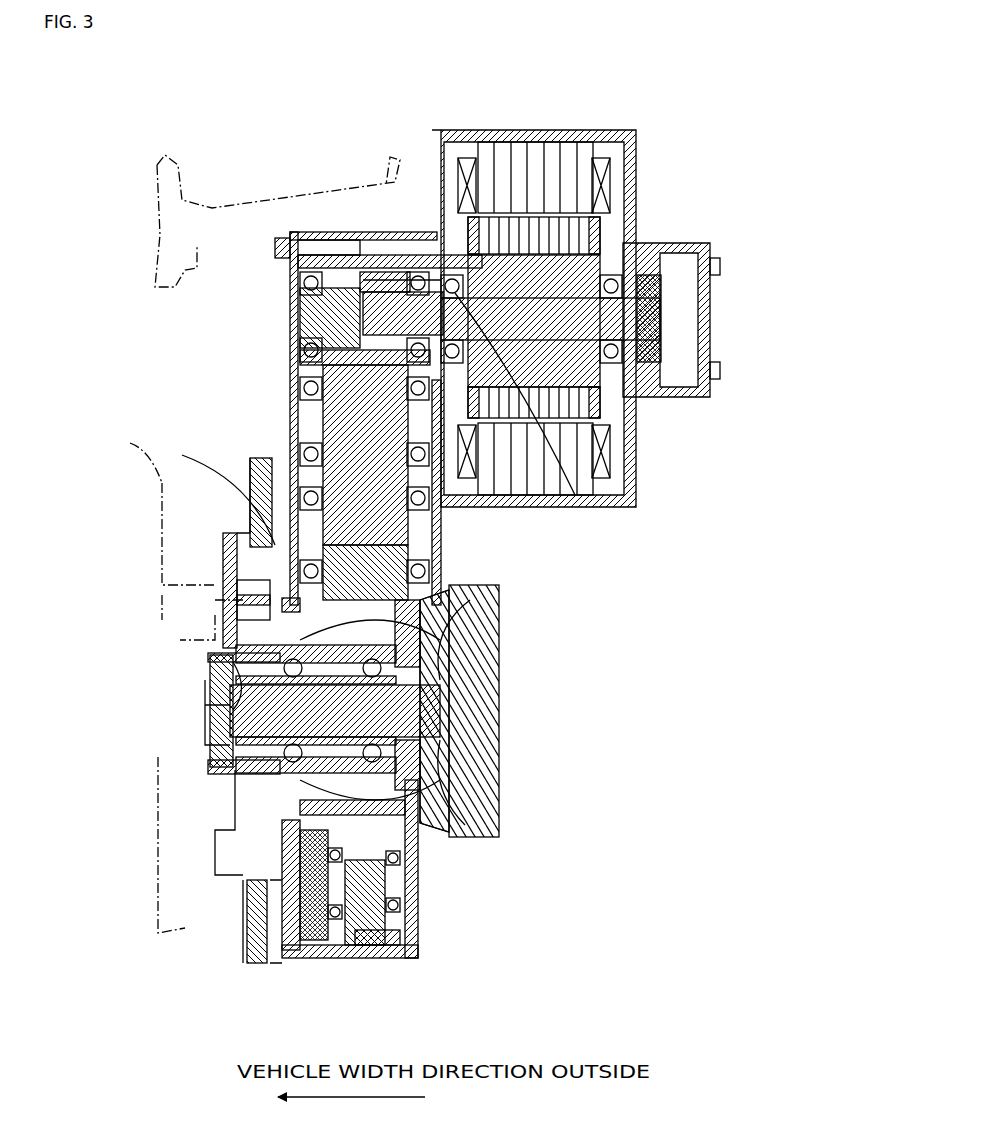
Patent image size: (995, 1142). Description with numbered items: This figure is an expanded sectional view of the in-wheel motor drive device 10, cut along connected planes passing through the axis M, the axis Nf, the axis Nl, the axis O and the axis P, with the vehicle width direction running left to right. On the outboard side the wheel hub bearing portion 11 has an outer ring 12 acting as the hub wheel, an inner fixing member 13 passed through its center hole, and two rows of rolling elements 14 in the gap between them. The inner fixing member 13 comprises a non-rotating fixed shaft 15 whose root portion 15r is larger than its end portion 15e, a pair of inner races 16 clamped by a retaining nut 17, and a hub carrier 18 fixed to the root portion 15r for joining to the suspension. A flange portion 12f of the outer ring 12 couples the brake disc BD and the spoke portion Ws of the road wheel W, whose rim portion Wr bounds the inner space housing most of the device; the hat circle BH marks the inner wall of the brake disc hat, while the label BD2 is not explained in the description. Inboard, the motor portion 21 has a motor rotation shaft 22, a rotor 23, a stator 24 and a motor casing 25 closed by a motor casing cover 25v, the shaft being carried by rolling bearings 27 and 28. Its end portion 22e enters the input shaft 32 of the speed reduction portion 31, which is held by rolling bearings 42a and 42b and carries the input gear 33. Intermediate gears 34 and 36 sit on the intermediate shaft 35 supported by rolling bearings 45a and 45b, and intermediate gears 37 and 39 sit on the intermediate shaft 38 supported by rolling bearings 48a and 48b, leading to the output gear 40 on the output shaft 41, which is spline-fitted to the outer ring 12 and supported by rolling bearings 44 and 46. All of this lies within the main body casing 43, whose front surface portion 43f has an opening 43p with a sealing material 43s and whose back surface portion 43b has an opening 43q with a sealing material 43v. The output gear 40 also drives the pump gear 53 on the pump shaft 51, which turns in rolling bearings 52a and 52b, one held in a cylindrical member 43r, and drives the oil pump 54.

The in-wheel motor drive device 10 is at (550, 301).
The wheel hub bearing portion 11 is at (330, 735).
The outer ring 12 is at (215, 745).
The flange portion 12f is at (230, 815).
The inner fixing member 13 is at (205, 672).
The rolling elements 14 is at (236, 778).
The fixed shaft 15 is at (424, 711).
The end portion 15e is at (250, 708).
The root portion 15r is at (455, 725).
The inner races 16 is at (265, 655).
The retaining nut 17 is at (230, 682).
The hub carrier 18 is at (495, 810).
The motor portion 21 is at (550, 311).
The motor rotation shaft 22 is at (600, 360).
The end portion 22e is at (338, 292).
The rotor 23 is at (565, 240).
The stator 24 is at (525, 150).
The motor casing 25 is at (486, 138).
The motor casing cover 25v is at (636, 160).
The rolling bearing 27 is at (575, 495).
The rolling bearing 28 is at (625, 355).
The speed reduction portion 31 is at (375, 399).
The input shaft 32 is at (305, 312).
The input gear 33 is at (375, 272).
The intermediate gear 34 is at (300, 358).
The intermediate shaft 35 is at (330, 430).
The intermediate gear 36 is at (300, 390).
The intermediate gear 37 is at (262, 480).
The intermediate shaft 38 is at (250, 527).
The intermediate gear 39 is at (440, 568).
The output gear 40 is at (390, 922).
The output shaft 41 is at (420, 830).
The rolling bearing 42a is at (292, 283).
The rolling bearing 42b is at (412, 275).
The main body casing 43 is at (290, 270).
The back surface portion 43b is at (500, 600).
The front surface portion 43f is at (292, 340).
The opening 43p is at (265, 615).
The opening 43q is at (420, 760).
The cylindrical member 43r is at (338, 958).
The sealing material 43s is at (300, 795).
The sealing material 43v is at (420, 640).
The rolling bearing 44 is at (282, 835).
The rolling bearing 45a is at (300, 452).
The rolling bearing 45b is at (440, 485).
The rolling bearing 46 is at (440, 790).
The rolling bearing 48a is at (272, 502).
The rolling bearing 48b is at (437, 545).
The pump shaft 51 is at (350, 900).
The rolling bearing 52a is at (330, 925).
The rolling bearing 52b is at (400, 925).
The pump gear 53 is at (380, 930).
The oil pump 54 is at (300, 925).
The axis M is at (725, 320).
The axis O is at (505, 713).
The axis P is at (435, 883).
The road wheel W is at (133, 457).
The spoke portion Ws is at (155, 251).
The rim portion Wr is at (400, 228).
The axis Nf is at (215, 418).
The axis Nl is at (505, 540).
The brake disc BD is at (220, 492).
The hat circle BH is at (255, 900).
The brake drum BD2 is at (245, 960).